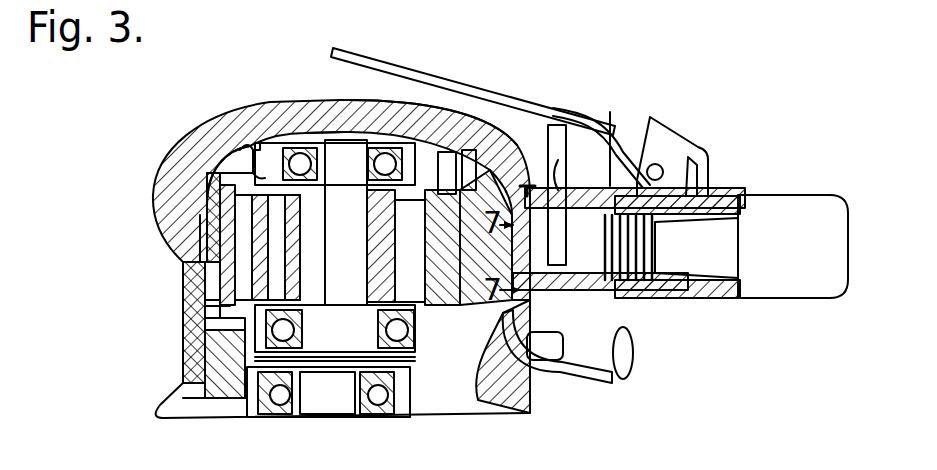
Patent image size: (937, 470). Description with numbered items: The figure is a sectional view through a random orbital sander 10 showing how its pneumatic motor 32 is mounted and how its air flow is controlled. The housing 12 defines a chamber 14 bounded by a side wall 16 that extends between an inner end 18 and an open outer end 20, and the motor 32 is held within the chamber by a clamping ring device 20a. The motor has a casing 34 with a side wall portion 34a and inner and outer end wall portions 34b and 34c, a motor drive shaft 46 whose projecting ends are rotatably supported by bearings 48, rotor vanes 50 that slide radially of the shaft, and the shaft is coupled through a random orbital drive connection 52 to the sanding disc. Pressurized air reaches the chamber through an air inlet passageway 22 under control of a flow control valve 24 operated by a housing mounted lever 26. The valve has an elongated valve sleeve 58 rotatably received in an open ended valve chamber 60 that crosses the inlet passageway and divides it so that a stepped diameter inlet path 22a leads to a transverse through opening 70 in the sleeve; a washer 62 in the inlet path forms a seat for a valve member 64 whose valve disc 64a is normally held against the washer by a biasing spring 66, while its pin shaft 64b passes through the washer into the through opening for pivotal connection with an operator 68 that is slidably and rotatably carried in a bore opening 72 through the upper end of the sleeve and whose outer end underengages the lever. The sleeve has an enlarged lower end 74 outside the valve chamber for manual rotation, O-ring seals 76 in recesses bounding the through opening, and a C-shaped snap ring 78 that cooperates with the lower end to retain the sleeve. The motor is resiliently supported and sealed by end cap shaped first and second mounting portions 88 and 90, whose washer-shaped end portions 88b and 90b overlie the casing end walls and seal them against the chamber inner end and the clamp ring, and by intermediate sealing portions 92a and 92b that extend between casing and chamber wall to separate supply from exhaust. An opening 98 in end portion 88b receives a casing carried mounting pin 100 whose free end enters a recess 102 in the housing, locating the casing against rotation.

The sander 10 is at (157, 138).
The housing 12 is at (150, 195).
The chamber 14 is at (260, 138).
The side wall 16 is at (205, 284).
The inner end 18 is at (212, 124).
The open outer end 20 is at (208, 332).
The clamping ring device 20a is at (200, 365).
The air inlet passageway 22 is at (755, 300).
The inlet path 22a is at (760, 278).
The flow control valve 24 is at (662, 367).
The lever 26 is at (355, 50).
The pneumatic motor 32 is at (205, 248).
The motor casing 34 is at (477, 163).
The side wall portion 34a is at (507, 200).
The inner end wall portion 34b is at (425, 187).
The outer end wall portion 34c is at (425, 415).
The motor drive shaft 46 is at (333, 150).
The bearings 48 is at (262, 137).
The rotor vanes 50 is at (420, 266).
The random orbital drive connection 52 is at (305, 420).
The valve sleeve 58 is at (580, 383).
The valve chamber 60 is at (605, 322).
The washer 62 is at (647, 160).
The valve member 64 is at (633, 348).
The valve disc 64a is at (688, 305).
The pin shaft 64b is at (447, 247).
The valve member biasing spring 66 is at (633, 165).
The operator 68 is at (553, 112).
The through opening 70 is at (561, 349).
The bore opening 72 is at (579, 195).
The enlarged lower end 74 is at (628, 378).
The O-ring seals 76 is at (537, 185).
The snap ring 78 is at (624, 135).
The first mounting portion 88 is at (205, 178).
The washer-shaped end portion 88b is at (252, 163).
The second mounting portion 90 is at (200, 306).
The washer-shaped end portion 90b is at (198, 305).
The sealing portion 92a is at (200, 210).
The sealing portion 92b is at (498, 366).
The opening 98 is at (399, 246).
The mounting pin 100 is at (450, 187).
The recess 102 is at (432, 187).